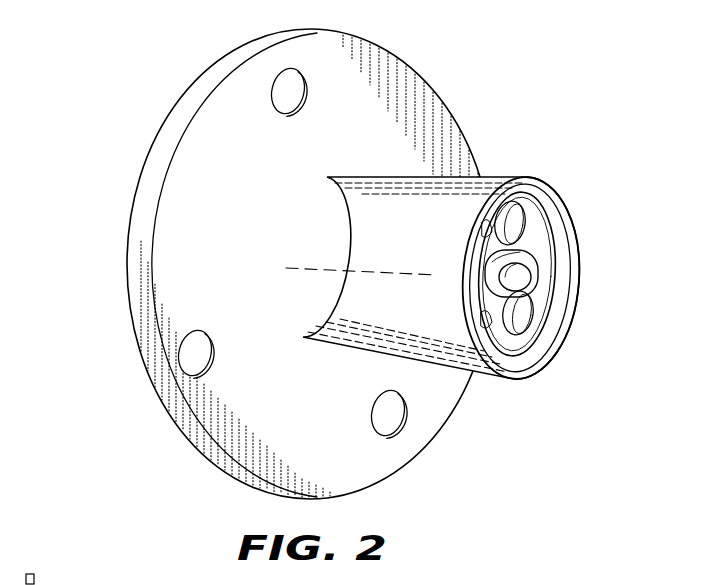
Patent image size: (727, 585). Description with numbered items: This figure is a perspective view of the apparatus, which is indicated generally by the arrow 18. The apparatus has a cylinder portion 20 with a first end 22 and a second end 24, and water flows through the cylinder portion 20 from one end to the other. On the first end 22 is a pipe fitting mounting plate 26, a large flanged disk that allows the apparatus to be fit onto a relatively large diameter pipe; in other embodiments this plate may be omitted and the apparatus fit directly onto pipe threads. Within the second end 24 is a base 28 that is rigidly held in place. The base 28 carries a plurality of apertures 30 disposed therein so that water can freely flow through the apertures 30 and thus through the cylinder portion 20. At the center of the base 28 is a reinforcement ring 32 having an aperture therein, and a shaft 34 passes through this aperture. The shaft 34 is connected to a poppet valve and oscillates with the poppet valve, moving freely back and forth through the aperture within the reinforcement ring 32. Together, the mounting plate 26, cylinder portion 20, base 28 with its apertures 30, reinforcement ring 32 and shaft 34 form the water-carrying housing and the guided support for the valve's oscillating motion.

The connector assembly 18 is at (428, 65).
The cylinder portion 20 is at (437, 208).
The first end 22 is at (283, 283).
The second end 24 is at (573, 317).
The pipe fitting mounting plate 26 is at (210, 118).
The base 28 is at (532, 231).
The apertures 30 is at (500, 322).
The reinforcement ring 32 is at (546, 254).
The shaft 34 is at (547, 286).